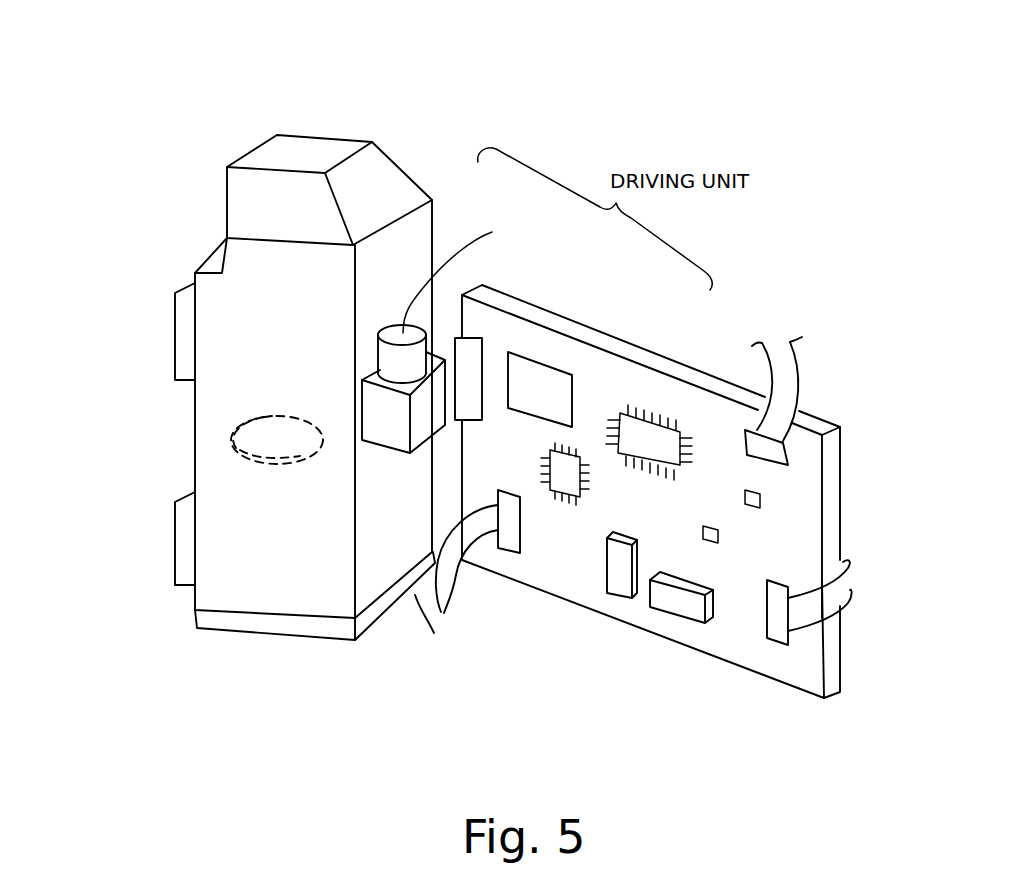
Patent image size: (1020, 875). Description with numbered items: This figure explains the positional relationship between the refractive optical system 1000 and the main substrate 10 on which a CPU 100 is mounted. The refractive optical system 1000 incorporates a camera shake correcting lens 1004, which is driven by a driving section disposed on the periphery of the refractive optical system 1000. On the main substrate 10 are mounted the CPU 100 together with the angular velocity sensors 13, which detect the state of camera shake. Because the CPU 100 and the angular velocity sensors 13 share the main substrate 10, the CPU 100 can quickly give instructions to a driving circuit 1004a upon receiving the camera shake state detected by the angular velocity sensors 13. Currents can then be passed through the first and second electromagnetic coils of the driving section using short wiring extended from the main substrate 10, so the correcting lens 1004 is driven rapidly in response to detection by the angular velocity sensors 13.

The refractive optical system 1000 is at (448, 118).
The camera shake correcting lens 1004 is at (275, 438).
The driving circuit 1004a is at (540, 392).
The main substrate 10 is at (843, 482).
The CPU 100 is at (662, 437).
The angular velocity sensors 13 is at (675, 598).